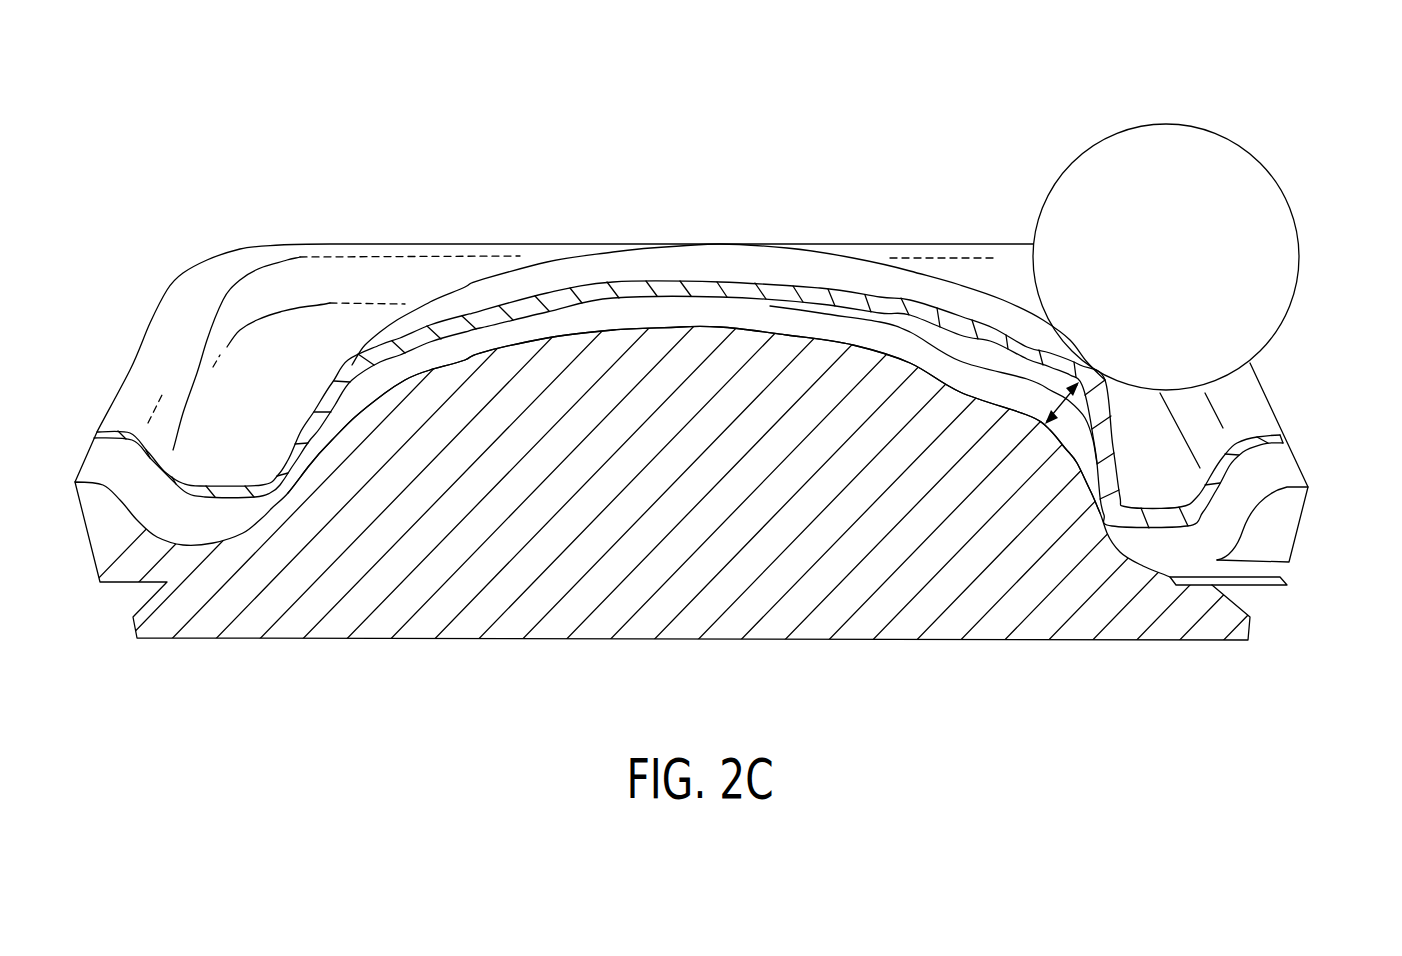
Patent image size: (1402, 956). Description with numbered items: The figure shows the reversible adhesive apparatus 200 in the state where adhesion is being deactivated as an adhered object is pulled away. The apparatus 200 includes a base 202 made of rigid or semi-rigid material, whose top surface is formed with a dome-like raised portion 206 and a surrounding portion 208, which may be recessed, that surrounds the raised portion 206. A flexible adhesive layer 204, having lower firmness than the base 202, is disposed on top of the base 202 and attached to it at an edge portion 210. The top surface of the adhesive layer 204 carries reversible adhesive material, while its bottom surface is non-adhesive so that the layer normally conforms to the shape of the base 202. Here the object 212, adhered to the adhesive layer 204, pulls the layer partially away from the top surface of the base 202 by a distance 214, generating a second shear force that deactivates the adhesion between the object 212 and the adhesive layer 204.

The reversible adhesive apparatus 200 is at (1277, 110).
The base 202 is at (445, 543).
The adhesive layer 204 is at (735, 262).
The raised portion 206 is at (790, 330).
The surrounding portion 208 is at (1177, 553).
The edge portion 210 is at (407, 268).
The object 212 is at (1108, 168).
The distance 214 is at (1045, 415).